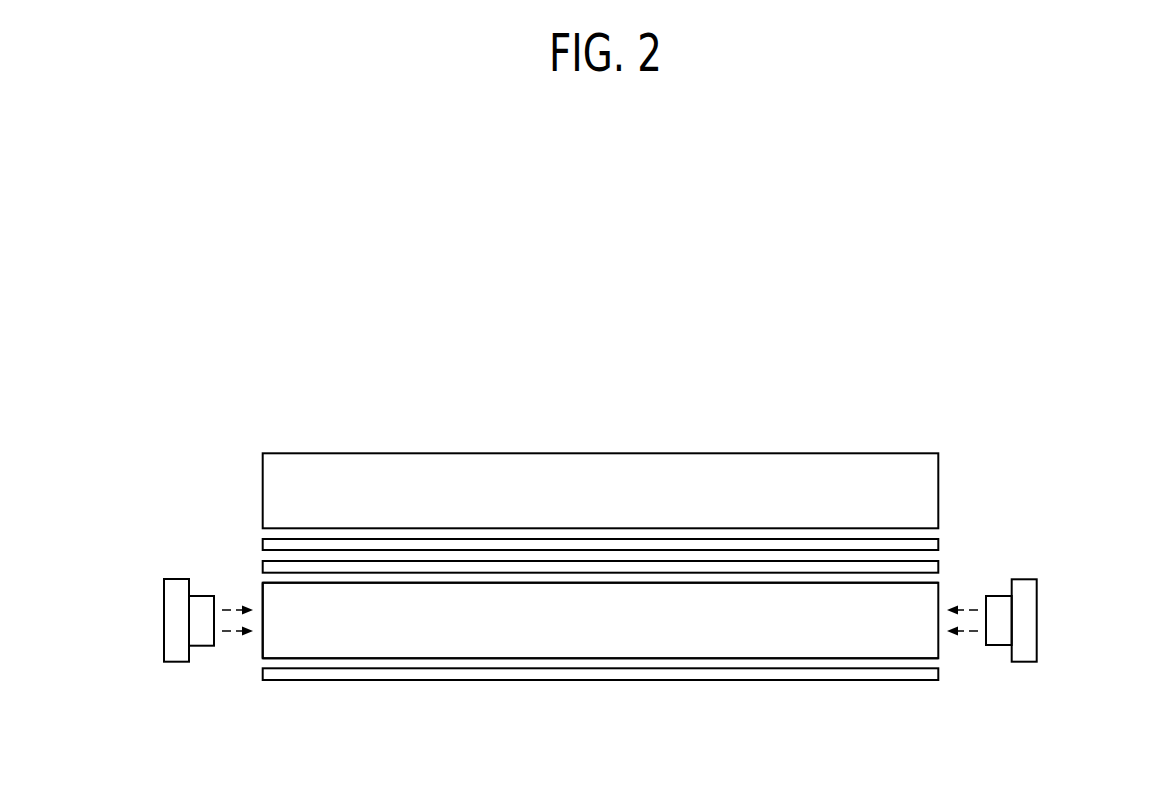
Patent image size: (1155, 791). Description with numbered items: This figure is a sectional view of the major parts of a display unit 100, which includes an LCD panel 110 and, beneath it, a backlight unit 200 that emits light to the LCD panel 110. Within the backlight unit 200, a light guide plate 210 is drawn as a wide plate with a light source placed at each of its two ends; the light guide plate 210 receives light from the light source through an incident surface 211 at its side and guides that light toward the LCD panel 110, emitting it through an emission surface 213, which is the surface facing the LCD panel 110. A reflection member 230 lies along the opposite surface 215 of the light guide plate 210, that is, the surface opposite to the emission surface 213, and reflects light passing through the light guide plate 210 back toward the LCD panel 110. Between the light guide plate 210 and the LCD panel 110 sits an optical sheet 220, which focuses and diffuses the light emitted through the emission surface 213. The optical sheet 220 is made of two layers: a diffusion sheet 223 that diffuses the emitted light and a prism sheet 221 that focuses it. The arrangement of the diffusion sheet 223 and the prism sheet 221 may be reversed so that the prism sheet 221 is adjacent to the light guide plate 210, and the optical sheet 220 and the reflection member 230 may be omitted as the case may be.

The display unit 100 is at (850, 330).
The LCD panel 110 is at (702, 460).
The backlight unit 200 is at (954, 534).
The light guide plate 210 is at (618, 642).
The incident surface 211 is at (262, 642).
The emission surface 213 is at (713, 584).
The opposite surface 215 is at (528, 659).
The optical sheet 220 is at (522, 373).
The prism sheet 221 is at (373, 543).
The diffusion sheet 223 is at (523, 565).
The reflection member 230 is at (390, 675).